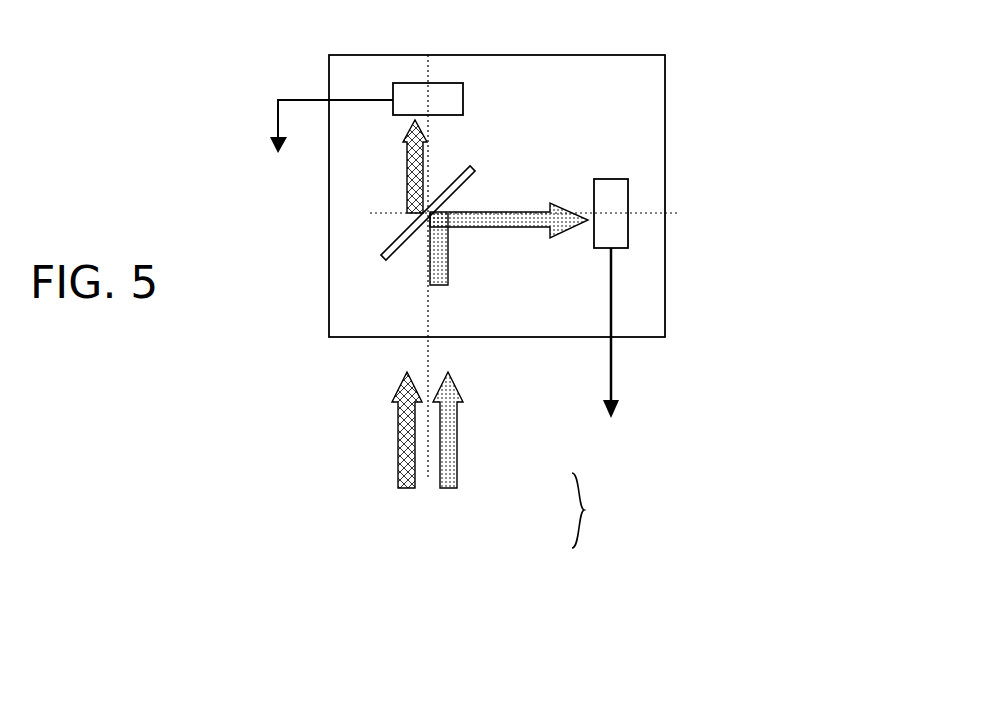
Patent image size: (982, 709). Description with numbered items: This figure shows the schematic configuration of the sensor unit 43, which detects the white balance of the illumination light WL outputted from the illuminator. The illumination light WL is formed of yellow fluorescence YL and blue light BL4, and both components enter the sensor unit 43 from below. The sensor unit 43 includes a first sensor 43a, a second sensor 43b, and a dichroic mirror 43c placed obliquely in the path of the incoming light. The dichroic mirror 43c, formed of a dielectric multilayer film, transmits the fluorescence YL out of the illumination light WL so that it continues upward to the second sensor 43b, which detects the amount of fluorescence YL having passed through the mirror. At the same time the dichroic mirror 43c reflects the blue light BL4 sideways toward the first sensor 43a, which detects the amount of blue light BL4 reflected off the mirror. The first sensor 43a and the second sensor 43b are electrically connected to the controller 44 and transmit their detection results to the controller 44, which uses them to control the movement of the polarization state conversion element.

The sensor unit 43 is at (665, 82).
The first sensor 43a is at (612, 238).
The second sensor 43b is at (446, 97).
The dichroic mirror 43c is at (387, 247).
The fluorescence YL is at (420, 143).
The blue light BL4 is at (502, 223).
The illumination light WL is at (600, 510).
The controller 44 is at (447, 276).